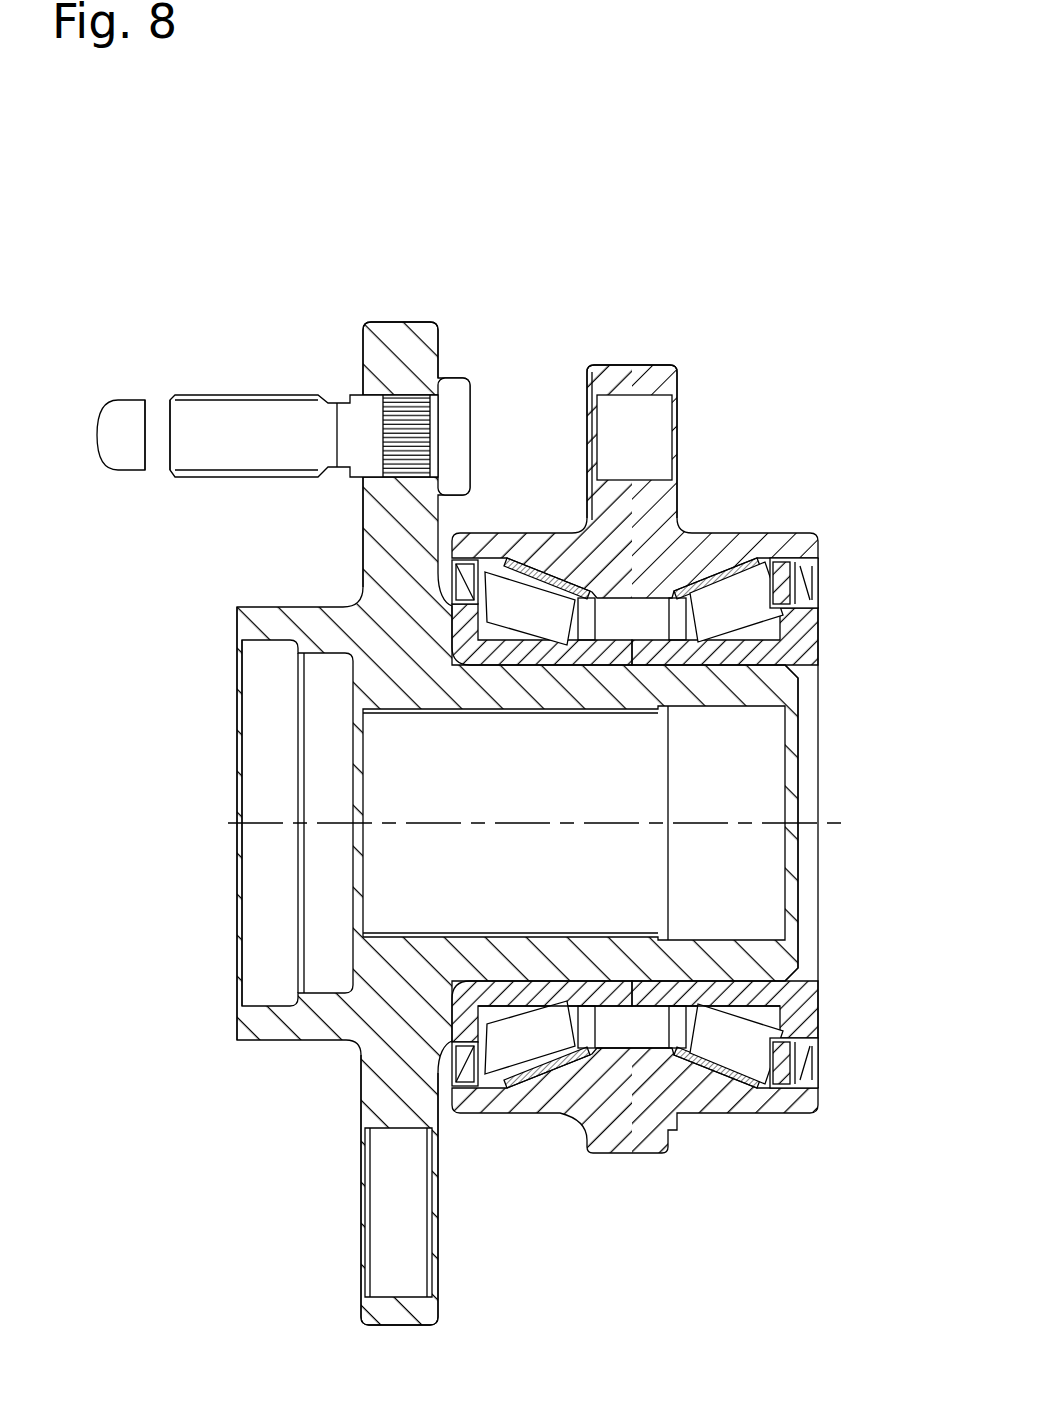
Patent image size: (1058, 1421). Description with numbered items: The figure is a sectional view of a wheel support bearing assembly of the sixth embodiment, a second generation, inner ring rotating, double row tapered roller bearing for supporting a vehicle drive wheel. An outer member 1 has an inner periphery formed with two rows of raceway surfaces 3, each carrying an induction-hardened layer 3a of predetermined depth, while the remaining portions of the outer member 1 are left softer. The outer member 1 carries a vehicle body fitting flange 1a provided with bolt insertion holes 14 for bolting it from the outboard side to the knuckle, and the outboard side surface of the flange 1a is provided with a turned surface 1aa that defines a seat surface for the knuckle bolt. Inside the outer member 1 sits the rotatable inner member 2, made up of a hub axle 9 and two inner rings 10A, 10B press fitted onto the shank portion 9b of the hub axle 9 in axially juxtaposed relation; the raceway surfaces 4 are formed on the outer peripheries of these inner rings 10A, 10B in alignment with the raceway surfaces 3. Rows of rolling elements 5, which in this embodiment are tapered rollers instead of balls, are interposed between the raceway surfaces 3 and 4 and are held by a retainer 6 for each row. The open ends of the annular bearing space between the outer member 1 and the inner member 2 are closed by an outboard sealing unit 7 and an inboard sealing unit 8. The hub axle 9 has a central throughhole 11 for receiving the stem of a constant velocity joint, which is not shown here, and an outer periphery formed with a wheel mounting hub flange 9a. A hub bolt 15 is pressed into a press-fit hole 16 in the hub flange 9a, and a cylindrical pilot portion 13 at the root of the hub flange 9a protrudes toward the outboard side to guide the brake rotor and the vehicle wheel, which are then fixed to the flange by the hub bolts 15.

The outer member 1 is at (635, 794).
The vehicle body fitting flange 1a is at (642, 394).
The turned surface 1aa is at (587, 420).
The inner member 2 is at (481, 770).
The raceway surfaces 3 is at (523, 1085).
The hardened layer 3a is at (555, 563).
The raceway surfaces 4 is at (787, 1033).
The rolling elements 5 is at (725, 1022).
The retainer 6 is at (640, 965).
The outboard sealing unit 7 is at (455, 580).
The inboard sealing unit 8 is at (822, 578).
The hub axle 9 is at (508, 770).
The hub flange 9a is at (384, 322).
The shank portion 9b is at (765, 688).
The inner ring 10A is at (553, 658).
The inner ring 10B is at (625, 712).
The throughhole 11 is at (433, 937).
The pilot portion 13 is at (238, 630).
The bolt insertion holes 14 is at (647, 395).
The hub bolt 15 is at (267, 376).
The press-fit hole 16 is at (385, 412).